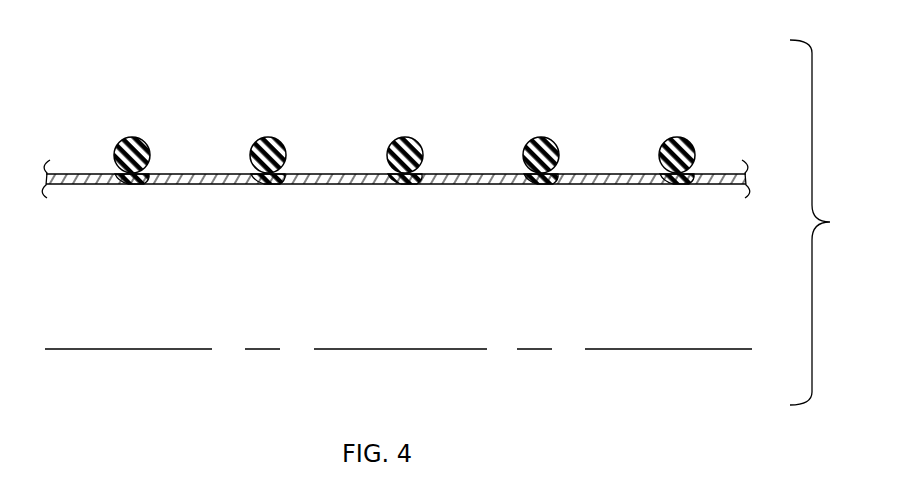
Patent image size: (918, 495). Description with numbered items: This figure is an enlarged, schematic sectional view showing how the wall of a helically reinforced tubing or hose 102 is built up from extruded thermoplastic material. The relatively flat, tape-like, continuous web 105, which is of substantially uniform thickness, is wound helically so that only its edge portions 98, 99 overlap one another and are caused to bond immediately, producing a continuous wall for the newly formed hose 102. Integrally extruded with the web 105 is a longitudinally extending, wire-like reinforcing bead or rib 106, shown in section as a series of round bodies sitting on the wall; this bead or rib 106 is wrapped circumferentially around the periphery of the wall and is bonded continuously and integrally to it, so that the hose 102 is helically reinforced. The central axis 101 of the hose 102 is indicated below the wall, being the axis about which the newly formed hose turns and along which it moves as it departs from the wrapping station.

The edge portion 98 is at (148, 171).
The edge portion 99 is at (116, 187).
The central axis 101 is at (355, 347).
The tubing or hose 102 is at (70, 168).
The web 105 is at (75, 185).
The reinforcing bead or rib 106 is at (146, 142).